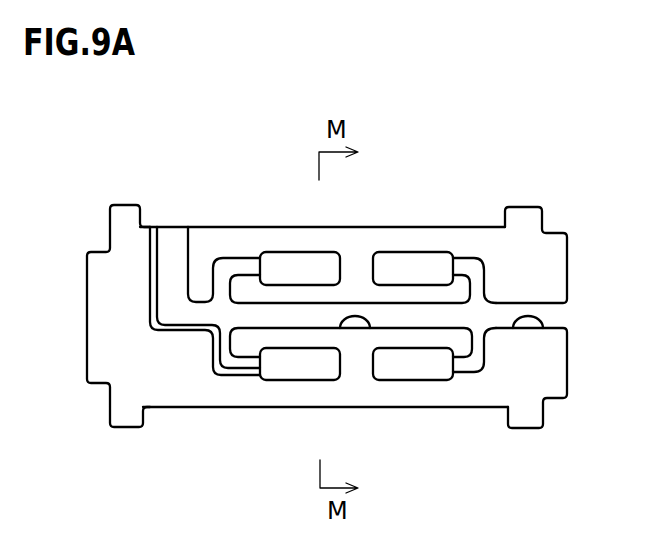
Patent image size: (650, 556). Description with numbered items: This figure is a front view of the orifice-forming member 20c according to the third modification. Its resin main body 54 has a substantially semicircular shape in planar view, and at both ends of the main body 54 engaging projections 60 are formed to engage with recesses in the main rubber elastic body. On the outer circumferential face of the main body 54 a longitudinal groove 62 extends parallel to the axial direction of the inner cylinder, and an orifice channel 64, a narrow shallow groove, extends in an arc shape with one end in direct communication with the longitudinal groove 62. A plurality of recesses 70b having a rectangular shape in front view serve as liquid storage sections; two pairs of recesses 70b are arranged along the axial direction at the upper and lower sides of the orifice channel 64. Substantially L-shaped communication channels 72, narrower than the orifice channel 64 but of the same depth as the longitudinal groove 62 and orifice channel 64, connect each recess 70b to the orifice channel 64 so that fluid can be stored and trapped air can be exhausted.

The orifice-forming member 20c is at (431, 135).
The main body 54 is at (357, 227).
The engaging projection 60 is at (87, 268).
The longitudinal groove 62 is at (157, 258).
The orifice channel 64 is at (520, 318).
The recess 70b is at (300, 268).
The communication channel 72 is at (242, 268).